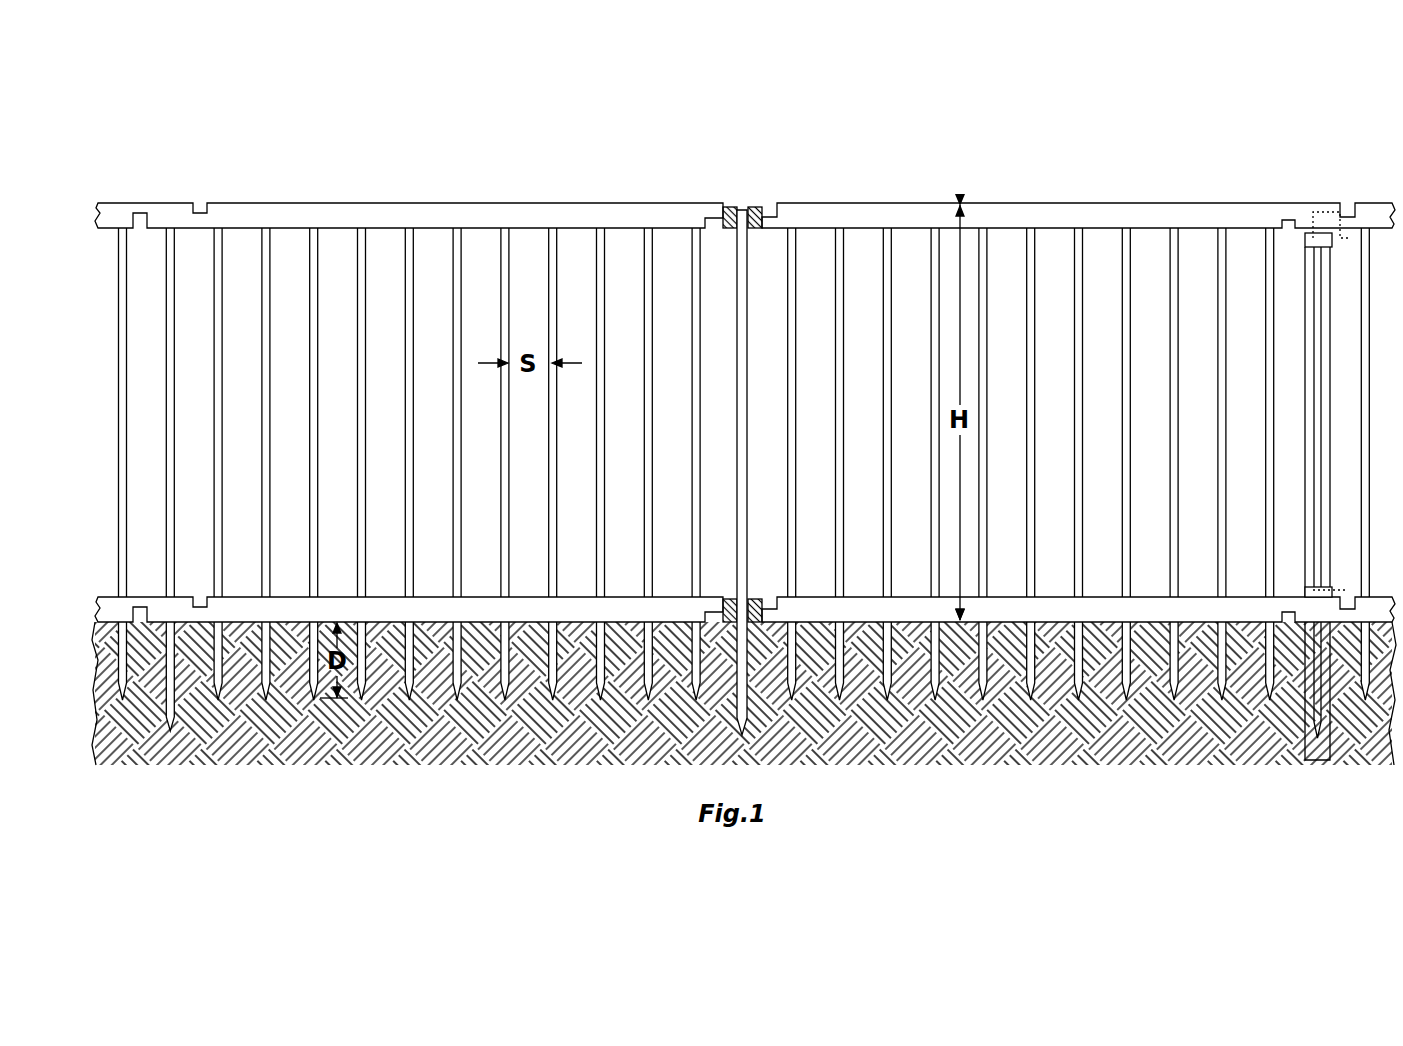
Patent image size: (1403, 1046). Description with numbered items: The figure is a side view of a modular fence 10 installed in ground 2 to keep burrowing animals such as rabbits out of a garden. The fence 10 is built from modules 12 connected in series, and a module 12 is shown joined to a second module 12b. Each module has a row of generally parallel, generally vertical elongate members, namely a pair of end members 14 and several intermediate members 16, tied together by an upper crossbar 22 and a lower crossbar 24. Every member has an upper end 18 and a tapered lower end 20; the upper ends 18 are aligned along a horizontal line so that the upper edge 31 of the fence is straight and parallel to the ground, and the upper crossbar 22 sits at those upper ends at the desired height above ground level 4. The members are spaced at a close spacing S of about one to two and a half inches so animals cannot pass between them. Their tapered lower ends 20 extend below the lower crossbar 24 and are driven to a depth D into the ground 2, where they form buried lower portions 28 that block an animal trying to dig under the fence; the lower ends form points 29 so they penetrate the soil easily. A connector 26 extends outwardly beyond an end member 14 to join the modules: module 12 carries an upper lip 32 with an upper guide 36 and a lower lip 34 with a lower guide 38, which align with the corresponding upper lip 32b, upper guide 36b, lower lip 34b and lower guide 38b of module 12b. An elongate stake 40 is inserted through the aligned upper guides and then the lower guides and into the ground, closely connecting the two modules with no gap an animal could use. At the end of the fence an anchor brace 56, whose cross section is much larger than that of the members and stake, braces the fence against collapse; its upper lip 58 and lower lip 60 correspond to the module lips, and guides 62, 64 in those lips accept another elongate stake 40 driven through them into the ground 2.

The ground 2 is at (388, 752).
The ground level 4 is at (286, 605).
The modular fence 10 is at (595, 172).
The module 12 is at (1052, 172).
The second module 12b is at (434, 170).
The end member 14 is at (125, 300).
The intermediate member 16 is at (450, 463).
The upper end 18 is at (365, 237).
The tapered lower end 20 is at (1180, 697).
The upper crossbar 22 is at (292, 203).
The lower crossbar 24 is at (390, 597).
The connector 26 is at (688, 185).
The buried lower portion 28 is at (205, 680).
The point 29 is at (1032, 692).
The upper edge 31 is at (505, 203).
The upper lip 32 is at (728, 229).
The upper lip of second module 32b is at (755, 206).
The lower lip 34 is at (728, 623).
The lower lip of second module 34b is at (758, 598).
The upper guide 36 is at (755, 229).
The upper guide of second module 36b is at (733, 206).
The lower guide 38 is at (752, 623).
The lower guide of second module 38b is at (728, 598).
The elongate stake 40 is at (178, 380).
The anchor brace 56 is at (1305, 452).
The upper lip of brace 58 is at (1304, 233).
The lower lip of brace 60 is at (1305, 590).
The upper guide of brace 62 is at (1348, 238).
The lower guide of brace 64 is at (1348, 590).